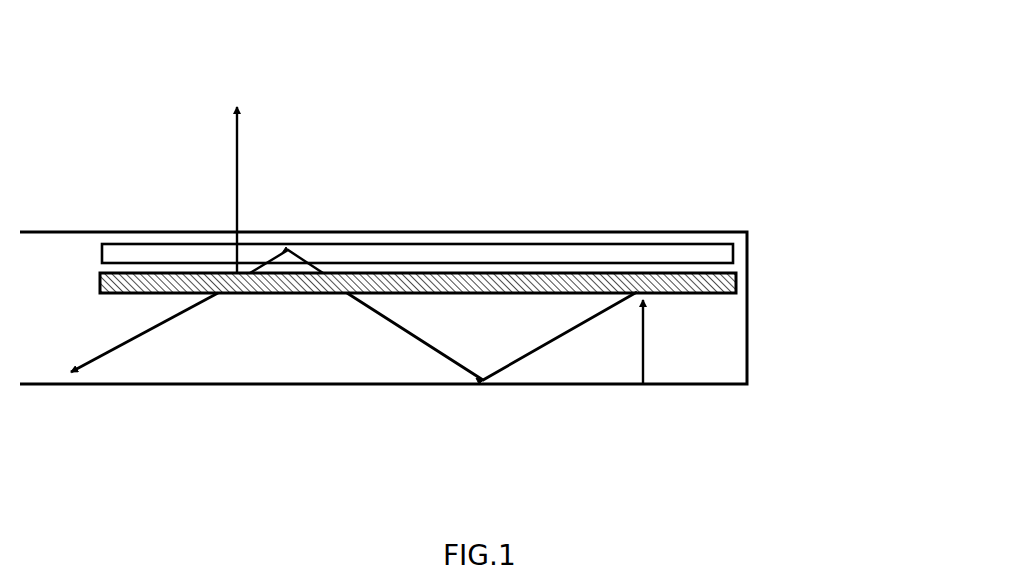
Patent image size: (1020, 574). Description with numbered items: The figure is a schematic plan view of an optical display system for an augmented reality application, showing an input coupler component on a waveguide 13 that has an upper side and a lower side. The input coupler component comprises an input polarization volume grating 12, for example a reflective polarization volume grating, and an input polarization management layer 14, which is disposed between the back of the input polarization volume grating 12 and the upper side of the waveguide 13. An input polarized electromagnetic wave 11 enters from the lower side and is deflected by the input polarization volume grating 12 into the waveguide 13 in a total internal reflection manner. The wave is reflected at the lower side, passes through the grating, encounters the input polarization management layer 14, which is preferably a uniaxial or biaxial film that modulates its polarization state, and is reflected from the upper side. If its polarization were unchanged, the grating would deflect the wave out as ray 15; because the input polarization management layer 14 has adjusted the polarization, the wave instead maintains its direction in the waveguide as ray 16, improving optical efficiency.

The input polarized electromagnetic wave 11 is at (643, 348).
The input polarization volume grating 12 is at (736, 281).
The waveguide 13 is at (747, 332).
The input polarization management layer 14 is at (735, 253).
The ray 15 is at (238, 143).
The ray 16 is at (120, 345).